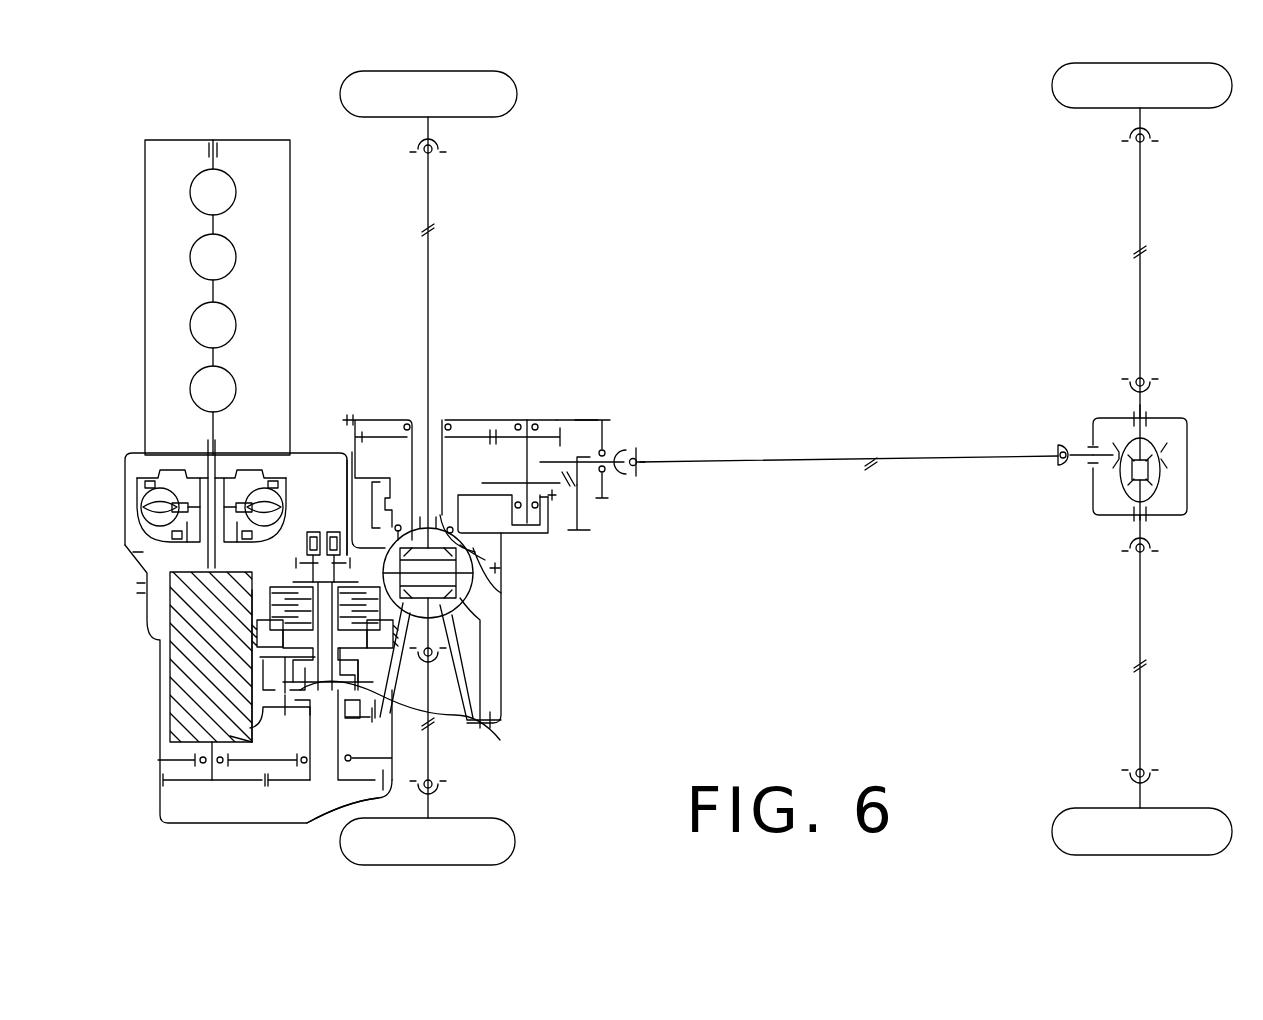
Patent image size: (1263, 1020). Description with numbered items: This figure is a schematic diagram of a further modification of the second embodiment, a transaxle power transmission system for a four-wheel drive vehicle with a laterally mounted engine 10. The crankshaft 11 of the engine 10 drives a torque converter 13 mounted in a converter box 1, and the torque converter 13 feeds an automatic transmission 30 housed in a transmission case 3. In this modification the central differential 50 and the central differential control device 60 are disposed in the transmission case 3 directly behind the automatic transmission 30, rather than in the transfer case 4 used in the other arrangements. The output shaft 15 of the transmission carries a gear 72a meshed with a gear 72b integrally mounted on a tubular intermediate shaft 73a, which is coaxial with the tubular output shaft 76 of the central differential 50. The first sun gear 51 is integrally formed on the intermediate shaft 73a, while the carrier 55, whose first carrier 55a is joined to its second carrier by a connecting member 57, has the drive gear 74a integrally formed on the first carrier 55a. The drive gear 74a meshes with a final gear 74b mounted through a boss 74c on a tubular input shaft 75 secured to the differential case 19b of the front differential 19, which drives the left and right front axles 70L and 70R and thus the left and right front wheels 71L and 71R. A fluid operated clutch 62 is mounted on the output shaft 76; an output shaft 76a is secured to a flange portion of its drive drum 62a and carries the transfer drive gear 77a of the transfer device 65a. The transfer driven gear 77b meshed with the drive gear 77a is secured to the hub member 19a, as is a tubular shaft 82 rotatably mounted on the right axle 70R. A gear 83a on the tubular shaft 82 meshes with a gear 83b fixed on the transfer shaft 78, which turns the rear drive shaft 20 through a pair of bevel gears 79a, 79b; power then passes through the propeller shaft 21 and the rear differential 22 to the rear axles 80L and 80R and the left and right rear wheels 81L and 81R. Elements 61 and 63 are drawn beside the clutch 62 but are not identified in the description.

The converter box 1 is at (125, 497).
The transmission case 3 is at (147, 627).
The transfer case 4 is at (591, 510).
The engine 10 is at (145, 358).
The crankshaft 11 is at (217, 432).
The torque converter 13 is at (136, 513).
The output shaft 15 is at (215, 765).
The front differential 19 is at (480, 600).
The hub member 19a is at (470, 555).
The differential case 19b is at (472, 588).
The rear drive shaft 20 is at (600, 460).
The propeller shaft 21 is at (943, 459).
The rear differential 22 is at (1162, 455).
The automatic transmission 30 is at (170, 678).
The central differential 50 is at (280, 710).
The first sun gear 51 is at (317, 683).
The carrier 55 is at (252, 678).
The first carrier 55a is at (265, 708).
The connecting member 57 is at (400, 716).
The central differential control device 60 is at (294, 522).
The first gear 61 is at (257, 630).
The fluid operated clutch 62 is at (323, 544).
The drive drum 62a is at (380, 528).
The first clutch 63 is at (272, 585).
The transfer device 65a is at (622, 485).
The right front axle 70R is at (432, 262).
The left front axle 70L is at (430, 763).
The right front wheel 71R is at (510, 112).
The left front wheel 71L is at (495, 826).
The gear 72a is at (222, 787).
The gear 72b is at (297, 783).
The tubular intermediate shaft 73a is at (330, 818).
The drive gear 74a is at (365, 740).
The final gear 74b is at (497, 745).
The boss 74c is at (472, 676).
The tubular input shaft 75 is at (458, 646).
The tubular output shaft 76 is at (360, 652).
The output shaft 76a is at (346, 456).
The transfer drive gear 77a is at (352, 560).
The transfer driven gear 77b is at (495, 595).
The transfer shaft 78 is at (540, 470).
The bevel gear 79a is at (567, 505).
The bevel gear 79b is at (595, 440).
The right rear axle 80R is at (1142, 294).
The left rear axle 80L is at (1142, 636).
The right rear wheel 81R is at (1190, 108).
The left rear wheel 81L is at (1195, 814).
The tubular shaft 82 is at (484, 475).
The gear 83a is at (452, 422).
The gear 83b is at (566, 410).